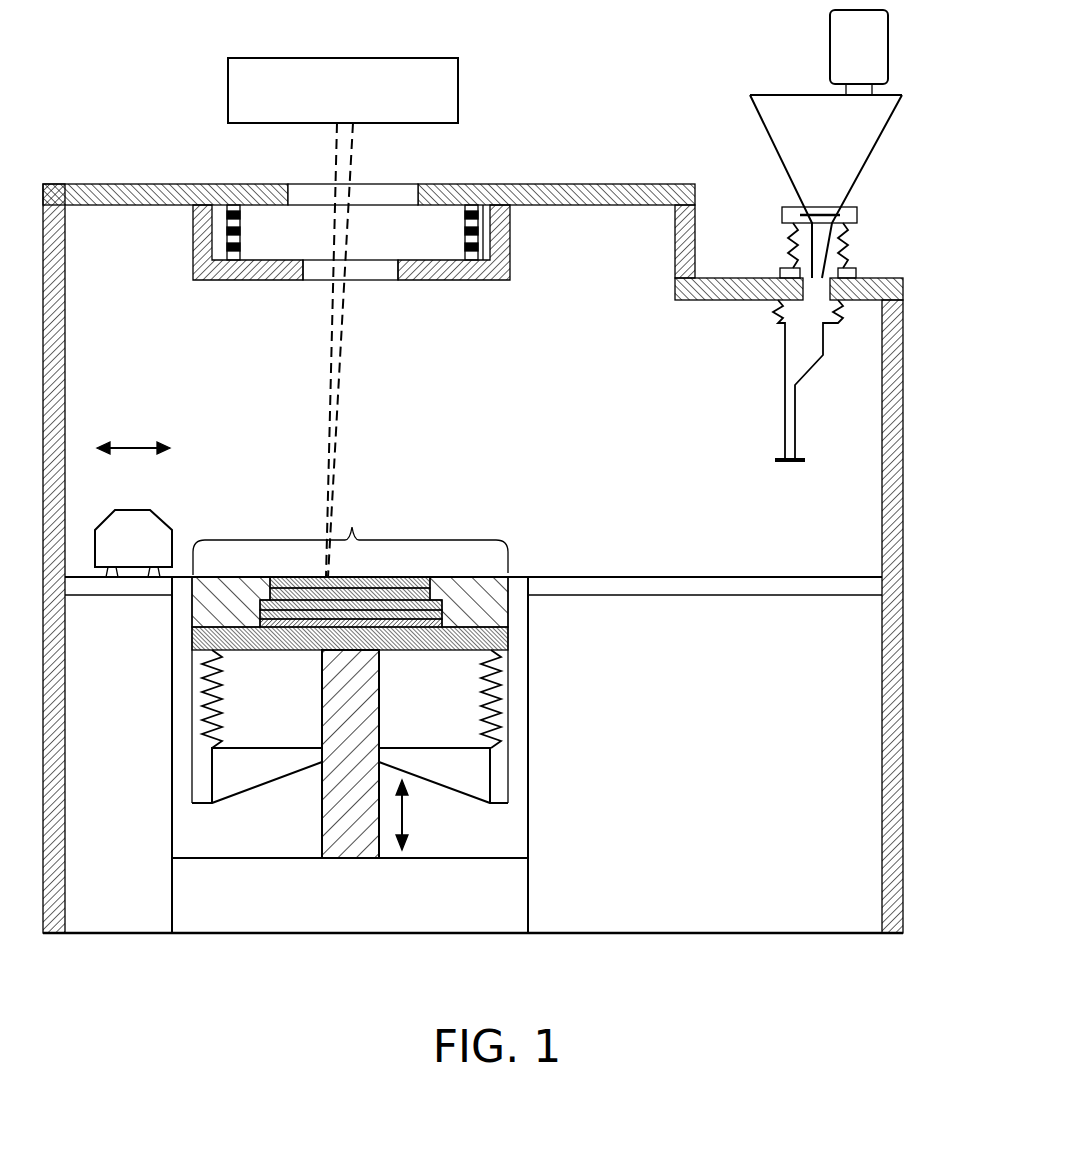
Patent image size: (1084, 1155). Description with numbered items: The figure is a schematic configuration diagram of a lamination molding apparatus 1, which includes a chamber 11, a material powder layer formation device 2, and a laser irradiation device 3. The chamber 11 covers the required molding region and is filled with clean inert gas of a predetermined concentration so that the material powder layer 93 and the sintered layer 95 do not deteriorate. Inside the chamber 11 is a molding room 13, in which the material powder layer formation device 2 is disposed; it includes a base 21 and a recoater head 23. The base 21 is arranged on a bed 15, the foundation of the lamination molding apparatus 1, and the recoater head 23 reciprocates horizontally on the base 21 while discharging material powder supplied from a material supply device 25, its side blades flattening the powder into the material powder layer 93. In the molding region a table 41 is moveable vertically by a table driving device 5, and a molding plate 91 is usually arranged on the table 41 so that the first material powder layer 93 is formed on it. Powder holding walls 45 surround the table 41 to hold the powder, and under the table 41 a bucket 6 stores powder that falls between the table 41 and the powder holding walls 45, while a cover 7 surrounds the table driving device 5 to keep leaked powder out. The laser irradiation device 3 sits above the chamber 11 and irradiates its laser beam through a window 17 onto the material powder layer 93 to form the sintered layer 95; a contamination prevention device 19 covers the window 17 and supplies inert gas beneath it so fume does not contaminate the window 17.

The lamination molding apparatus 1 is at (117, 145).
The material powder layer formation device 2 is at (350, 514).
The laser irradiation device 3 is at (418, 70).
The table driving device 5 is at (330, 810).
The bucket 6 is at (200, 793).
The cover 7 is at (205, 725).
The chamber 11 is at (893, 322).
The molding room 13 is at (618, 388).
The bed 15 is at (562, 928).
The window 17 is at (300, 188).
The contamination prevention device 19 is at (270, 272).
The base 21 is at (163, 592).
The recoater head 23 is at (152, 526).
The material supply device 25 is at (780, 105).
The table 41 is at (500, 645).
The powder holding walls 45 is at (480, 725).
The molding plate 91 is at (465, 625).
The material powder layer 93 is at (355, 580).
The sintered layer 95 is at (292, 578).